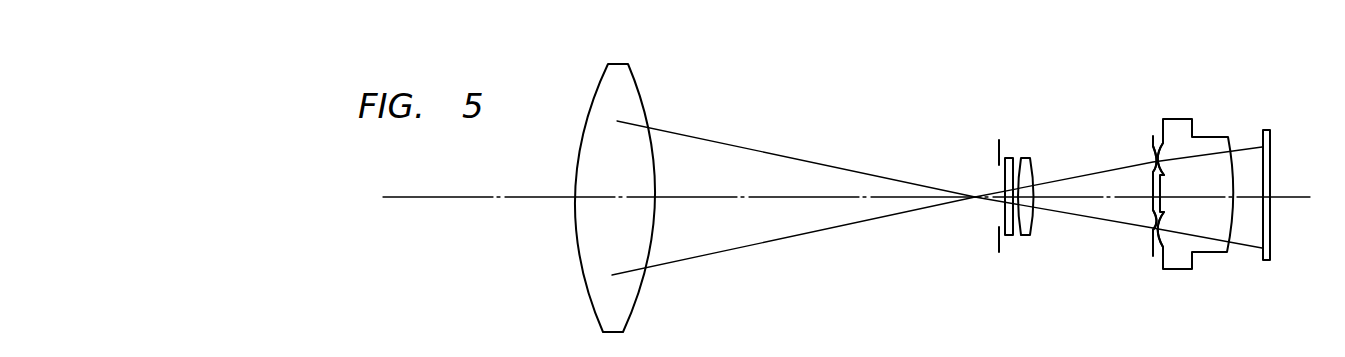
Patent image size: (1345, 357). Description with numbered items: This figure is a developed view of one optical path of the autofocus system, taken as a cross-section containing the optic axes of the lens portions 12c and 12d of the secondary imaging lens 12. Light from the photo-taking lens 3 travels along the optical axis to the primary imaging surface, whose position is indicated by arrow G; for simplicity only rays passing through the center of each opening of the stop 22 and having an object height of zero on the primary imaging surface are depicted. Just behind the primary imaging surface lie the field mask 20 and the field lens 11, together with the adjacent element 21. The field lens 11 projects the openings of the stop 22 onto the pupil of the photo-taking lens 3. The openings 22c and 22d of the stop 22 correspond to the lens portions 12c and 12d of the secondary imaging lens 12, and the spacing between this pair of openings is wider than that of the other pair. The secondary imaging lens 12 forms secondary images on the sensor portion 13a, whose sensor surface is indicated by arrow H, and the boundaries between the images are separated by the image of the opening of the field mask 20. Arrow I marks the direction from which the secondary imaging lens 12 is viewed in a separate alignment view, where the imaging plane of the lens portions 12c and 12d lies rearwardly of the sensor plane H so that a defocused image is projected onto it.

The photo-taking lens 3 is at (627, 310).
The primary imaging surface G is at (977, 192).
The field mask 20 is at (998, 150).
The plate 21 is at (1008, 236).
The field lens 11 is at (1034, 231).
The stop 22 is at (1153, 238).
The opening 22d is at (1155, 160).
The opening 22c is at (1152, 222).
The secondary imaging lens 12 is at (1210, 246).
The lens portion 12d is at (1165, 157).
The lens portion 12c is at (1165, 225).
The sensor portion 13a is at (1270, 252).
The sensor surface H is at (1266, 128).
The viewing direction arrow I is at (1175, 297).